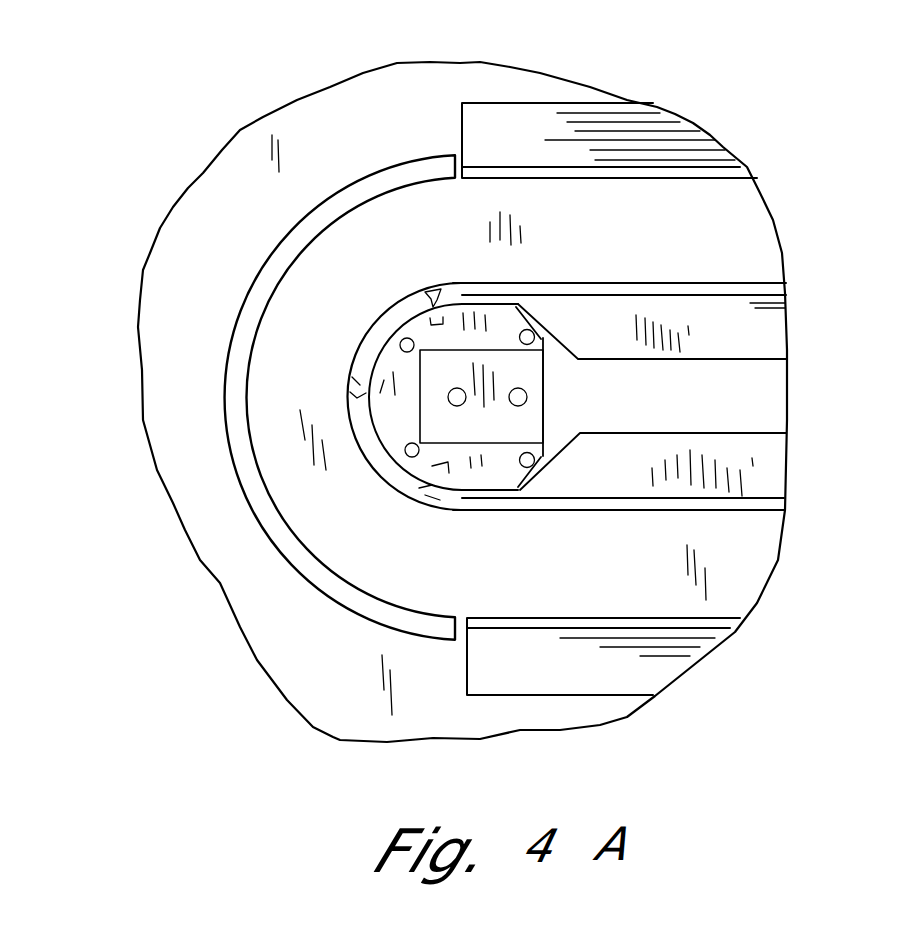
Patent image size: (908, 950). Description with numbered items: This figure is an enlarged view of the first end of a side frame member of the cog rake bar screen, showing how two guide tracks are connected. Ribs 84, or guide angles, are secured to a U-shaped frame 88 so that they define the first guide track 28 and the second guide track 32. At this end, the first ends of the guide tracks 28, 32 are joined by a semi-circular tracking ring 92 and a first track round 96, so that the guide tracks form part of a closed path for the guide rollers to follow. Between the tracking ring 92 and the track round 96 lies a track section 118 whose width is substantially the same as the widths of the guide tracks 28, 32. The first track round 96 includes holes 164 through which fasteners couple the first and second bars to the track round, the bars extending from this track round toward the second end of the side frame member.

The first guide track 28 is at (747, 217).
The second guide track 32 is at (747, 558).
The ribs 84 is at (540, 113).
The U-shaped frame 88 is at (167, 298).
The semi-circular tracking ring 92 is at (246, 422).
The first track round 96 is at (393, 420).
The track section 118 is at (293, 495).
The holes 164 is at (470, 392).